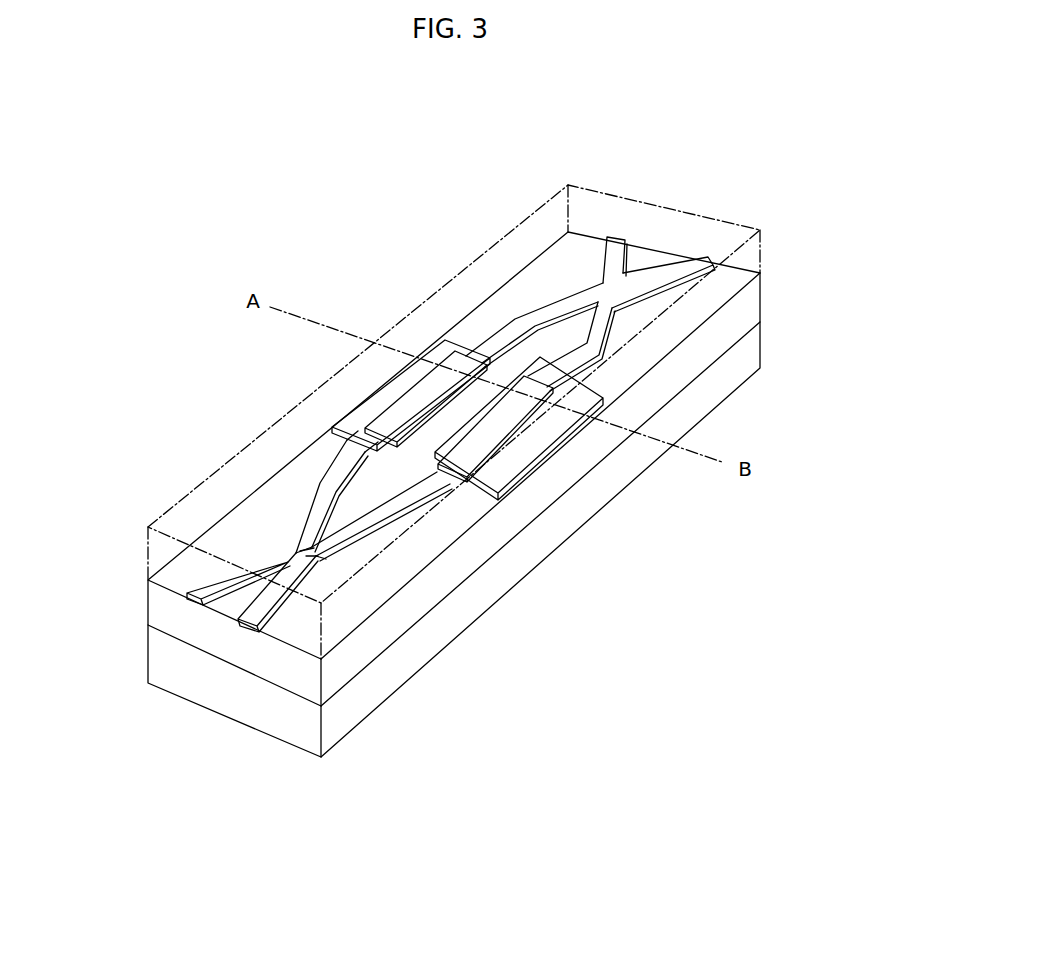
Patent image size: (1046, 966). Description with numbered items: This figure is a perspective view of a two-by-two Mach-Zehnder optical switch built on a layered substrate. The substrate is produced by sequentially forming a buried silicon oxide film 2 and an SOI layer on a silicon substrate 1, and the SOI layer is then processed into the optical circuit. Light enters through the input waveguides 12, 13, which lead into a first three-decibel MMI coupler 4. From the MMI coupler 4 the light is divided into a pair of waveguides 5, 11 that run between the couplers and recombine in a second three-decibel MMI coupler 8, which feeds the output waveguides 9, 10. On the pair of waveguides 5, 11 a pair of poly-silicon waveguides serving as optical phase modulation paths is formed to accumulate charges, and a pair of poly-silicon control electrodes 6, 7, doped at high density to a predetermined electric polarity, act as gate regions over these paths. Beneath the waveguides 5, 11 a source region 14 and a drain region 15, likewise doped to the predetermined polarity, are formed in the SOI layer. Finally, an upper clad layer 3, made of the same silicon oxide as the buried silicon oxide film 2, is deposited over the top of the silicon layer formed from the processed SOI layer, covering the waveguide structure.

The silicon substrate 1 is at (222, 703).
The buried silicon oxide film 2 is at (348, 673).
The upper clad layer 3 is at (200, 497).
The 3 dB MMI coupler 4 is at (300, 550).
The waveguide 5 is at (330, 485).
The poly-silicon control electrode 6 is at (405, 405).
The poly-silicon control electrode 7 is at (528, 372).
The 3 dB MMI coupler 8 is at (603, 287).
The output waveguide 9 is at (613, 238).
The output waveguide 10 is at (697, 257).
The waveguide 11 is at (430, 462).
The input waveguide 12 is at (268, 630).
The input waveguide 13 is at (197, 590).
The source region 14 is at (437, 353).
The drain region 15 is at (400, 452).